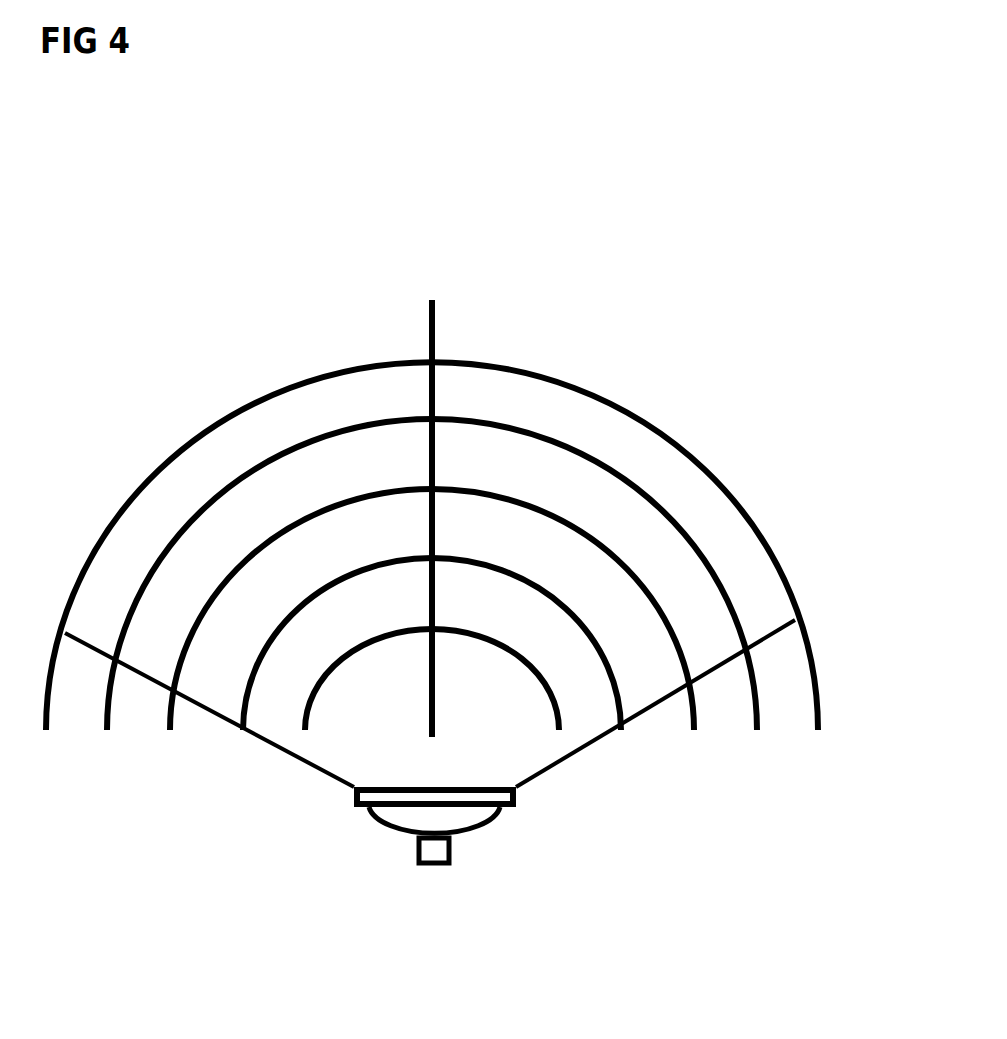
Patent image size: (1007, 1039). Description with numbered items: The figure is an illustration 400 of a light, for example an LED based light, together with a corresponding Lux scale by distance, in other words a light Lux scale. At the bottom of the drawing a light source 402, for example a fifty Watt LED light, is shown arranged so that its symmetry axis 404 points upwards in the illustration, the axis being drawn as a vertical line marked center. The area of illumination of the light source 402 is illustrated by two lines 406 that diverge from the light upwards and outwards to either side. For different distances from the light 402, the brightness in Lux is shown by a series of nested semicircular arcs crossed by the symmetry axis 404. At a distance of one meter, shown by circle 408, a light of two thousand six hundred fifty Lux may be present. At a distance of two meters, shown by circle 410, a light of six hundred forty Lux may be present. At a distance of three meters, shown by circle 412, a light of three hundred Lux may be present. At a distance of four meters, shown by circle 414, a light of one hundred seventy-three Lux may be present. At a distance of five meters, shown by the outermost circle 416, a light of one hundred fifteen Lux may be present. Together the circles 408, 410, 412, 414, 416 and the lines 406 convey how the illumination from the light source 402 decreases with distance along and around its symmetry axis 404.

The illustration 400 is at (807, 115).
The light source 402 is at (447, 855).
The symmetry axis 404 is at (435, 322).
The lines 406 is at (108, 652).
The circle 408 is at (548, 693).
The circle 410 is at (243, 692).
The circle 412 is at (688, 692).
The circle 414 is at (108, 692).
The circle 416 is at (675, 447).